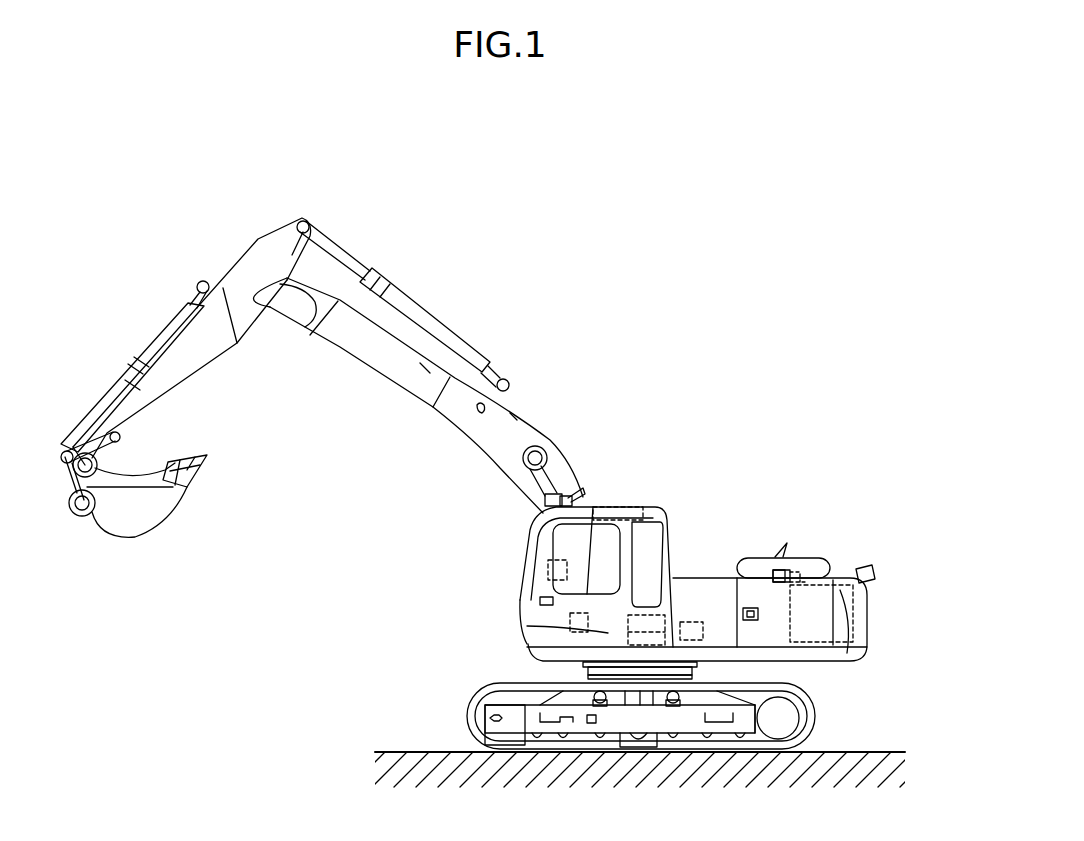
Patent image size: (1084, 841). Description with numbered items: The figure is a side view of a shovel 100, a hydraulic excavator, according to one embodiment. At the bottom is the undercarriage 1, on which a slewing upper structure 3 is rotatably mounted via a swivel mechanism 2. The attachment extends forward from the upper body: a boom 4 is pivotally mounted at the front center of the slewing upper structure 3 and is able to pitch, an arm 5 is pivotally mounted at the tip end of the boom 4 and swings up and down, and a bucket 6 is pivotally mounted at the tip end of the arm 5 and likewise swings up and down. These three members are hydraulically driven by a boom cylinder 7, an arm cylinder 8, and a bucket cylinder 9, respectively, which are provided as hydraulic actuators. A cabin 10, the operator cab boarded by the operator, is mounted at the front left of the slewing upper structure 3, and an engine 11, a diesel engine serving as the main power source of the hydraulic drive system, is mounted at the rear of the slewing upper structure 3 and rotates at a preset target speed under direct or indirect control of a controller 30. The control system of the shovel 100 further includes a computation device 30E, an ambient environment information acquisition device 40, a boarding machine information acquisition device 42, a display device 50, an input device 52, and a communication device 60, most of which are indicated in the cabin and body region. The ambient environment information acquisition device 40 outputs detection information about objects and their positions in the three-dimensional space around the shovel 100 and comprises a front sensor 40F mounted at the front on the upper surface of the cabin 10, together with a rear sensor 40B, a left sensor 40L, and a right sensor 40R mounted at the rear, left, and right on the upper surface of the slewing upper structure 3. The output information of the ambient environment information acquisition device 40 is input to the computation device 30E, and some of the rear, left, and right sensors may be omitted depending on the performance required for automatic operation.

The shovel 100 is at (730, 258).
The undercarriage 1 is at (812, 713).
The swivel mechanism 2 is at (690, 667).
The slewing upper structure 3 is at (878, 602).
The boom 4 is at (470, 430).
The arm 5 is at (193, 367).
The bucket 6 is at (131, 527).
The boom cylinder 7 is at (533, 489).
The arm cylinder 8 is at (427, 322).
The bucket cylinder 9 is at (163, 337).
The cabin 10 is at (668, 521).
The engine 11 is at (855, 620).
The controller 30 is at (623, 623).
The computation device 30E is at (622, 620).
The ambient environment information acquisition device 40 is at (827, 362).
The front sensor 40F is at (567, 497).
The left sensor 40L is at (762, 567).
The right sensor 40R is at (800, 567).
The rear sensor 40B is at (866, 565).
The boarding machine information acquisition device 42 is at (688, 620).
The display device 50 is at (553, 560).
The input device 52 is at (567, 622).
The communication device 60 is at (615, 505).